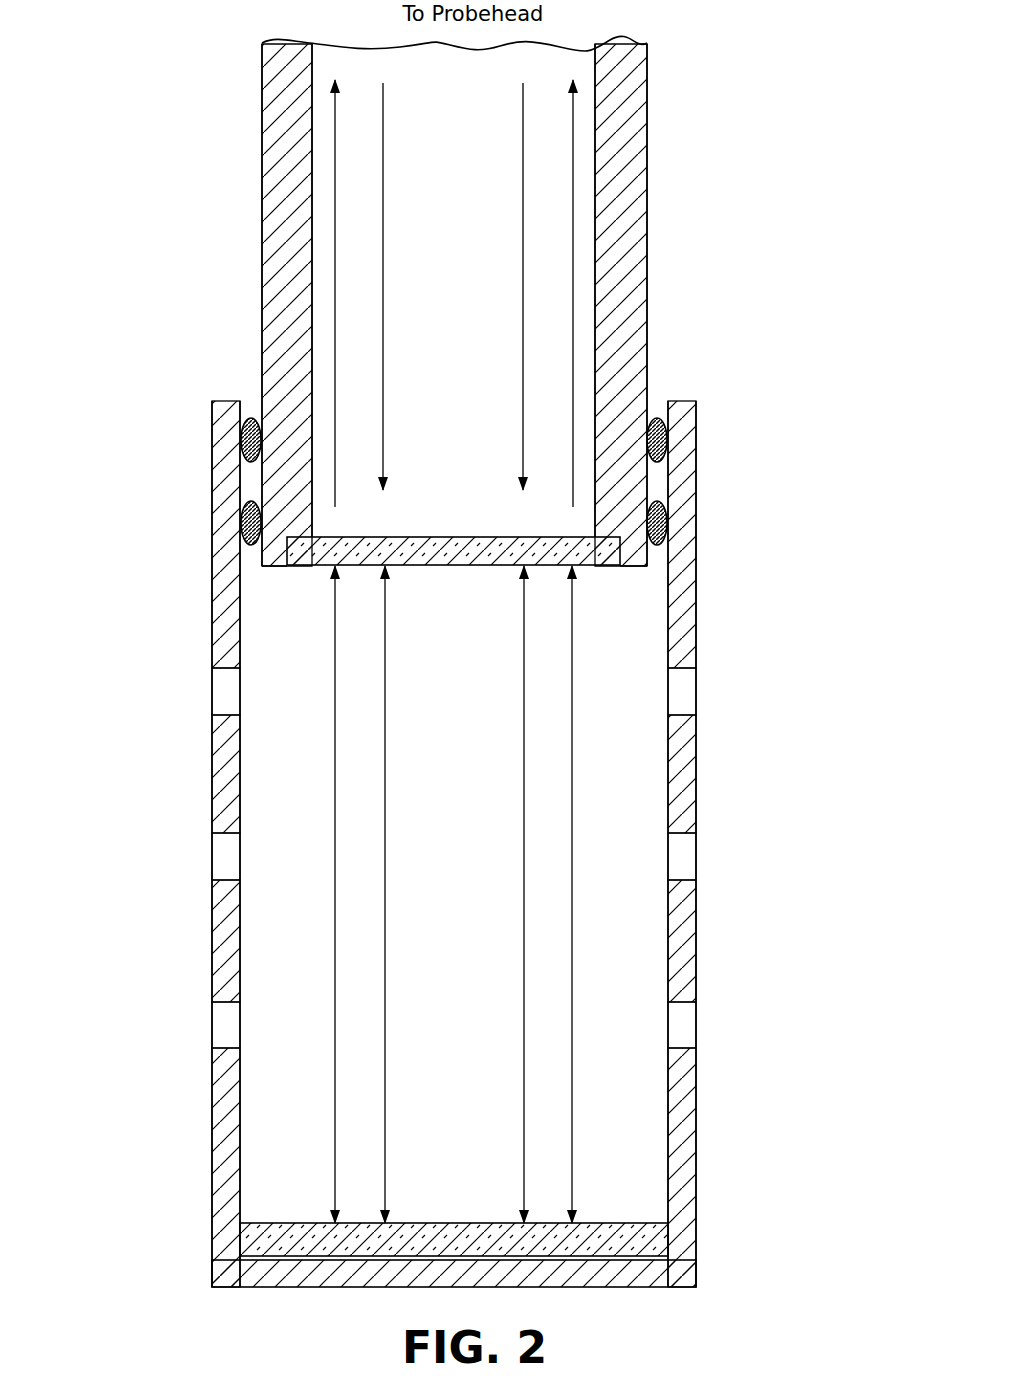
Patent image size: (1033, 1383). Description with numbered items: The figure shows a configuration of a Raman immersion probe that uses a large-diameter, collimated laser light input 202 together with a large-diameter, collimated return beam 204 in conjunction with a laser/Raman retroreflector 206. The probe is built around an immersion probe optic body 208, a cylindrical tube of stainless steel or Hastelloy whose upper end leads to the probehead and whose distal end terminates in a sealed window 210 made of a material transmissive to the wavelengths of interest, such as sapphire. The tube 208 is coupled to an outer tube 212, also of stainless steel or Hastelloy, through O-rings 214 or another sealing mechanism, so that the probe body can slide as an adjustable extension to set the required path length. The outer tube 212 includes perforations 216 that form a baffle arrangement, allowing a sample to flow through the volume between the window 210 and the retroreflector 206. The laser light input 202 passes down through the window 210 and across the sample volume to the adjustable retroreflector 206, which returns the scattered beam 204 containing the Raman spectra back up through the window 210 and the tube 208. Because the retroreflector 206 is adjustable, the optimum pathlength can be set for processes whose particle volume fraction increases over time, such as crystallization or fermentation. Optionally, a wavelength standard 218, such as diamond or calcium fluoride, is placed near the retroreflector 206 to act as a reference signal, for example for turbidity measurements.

The collimated laser light input 202 is at (386, 790).
The collimated return beam 204 is at (338, 1040).
The laser/Raman retroreflector 206 is at (252, 1270).
The immersion probe optic body 208 is at (647, 293).
The sealed window 210 is at (295, 556).
The outer tube 212 is at (698, 470).
The O-rings 214 is at (241, 523).
The perforations 216 is at (207, 865).
The wavelength standard 218 is at (655, 1240).